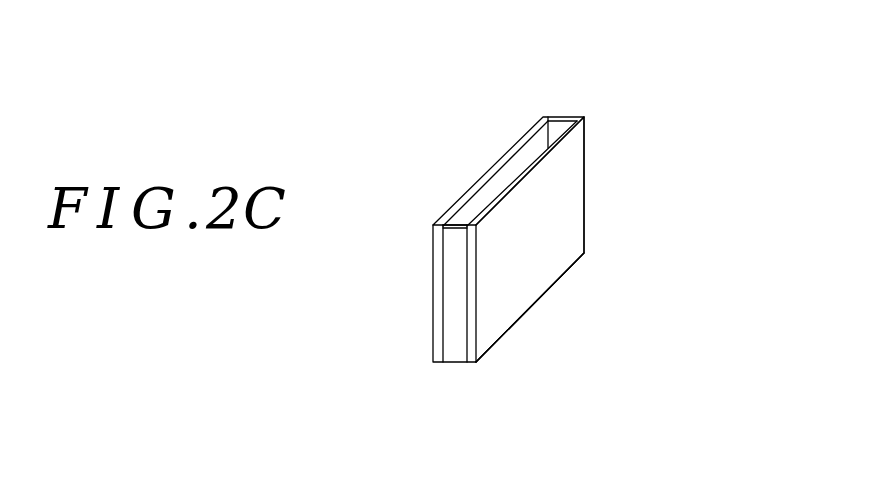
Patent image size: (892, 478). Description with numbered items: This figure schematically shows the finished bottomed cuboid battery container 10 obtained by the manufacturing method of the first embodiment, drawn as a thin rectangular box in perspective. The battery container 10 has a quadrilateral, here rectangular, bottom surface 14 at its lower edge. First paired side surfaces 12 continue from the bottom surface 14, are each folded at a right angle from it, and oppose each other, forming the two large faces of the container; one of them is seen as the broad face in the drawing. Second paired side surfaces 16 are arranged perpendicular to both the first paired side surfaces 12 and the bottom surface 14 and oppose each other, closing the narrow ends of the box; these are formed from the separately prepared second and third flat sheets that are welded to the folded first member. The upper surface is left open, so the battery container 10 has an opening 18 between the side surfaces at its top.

The battery container 10 is at (575, 117).
The first paired side surfaces 12 is at (477, 182).
The bottom surface 14 is at (530, 308).
The second paired side surfaces 16 is at (388, 342).
The opening 18 is at (505, 180).